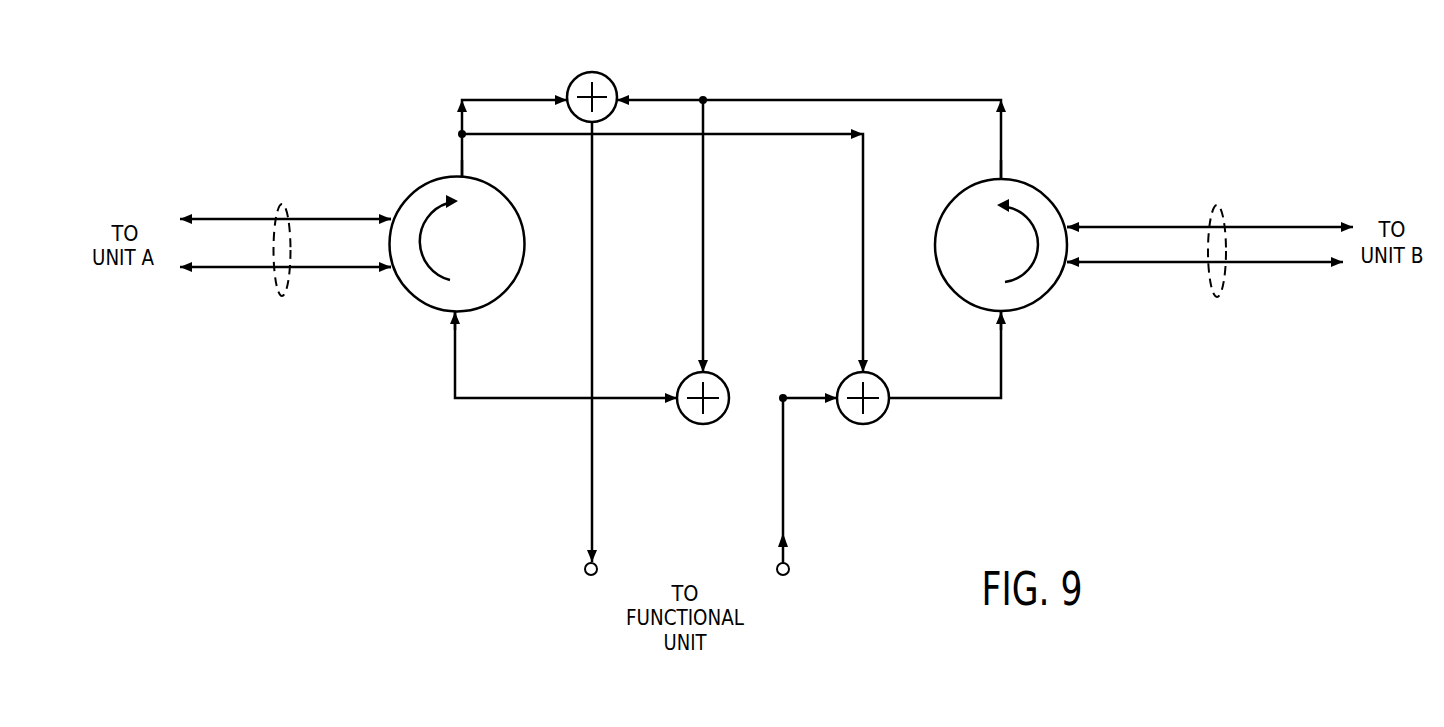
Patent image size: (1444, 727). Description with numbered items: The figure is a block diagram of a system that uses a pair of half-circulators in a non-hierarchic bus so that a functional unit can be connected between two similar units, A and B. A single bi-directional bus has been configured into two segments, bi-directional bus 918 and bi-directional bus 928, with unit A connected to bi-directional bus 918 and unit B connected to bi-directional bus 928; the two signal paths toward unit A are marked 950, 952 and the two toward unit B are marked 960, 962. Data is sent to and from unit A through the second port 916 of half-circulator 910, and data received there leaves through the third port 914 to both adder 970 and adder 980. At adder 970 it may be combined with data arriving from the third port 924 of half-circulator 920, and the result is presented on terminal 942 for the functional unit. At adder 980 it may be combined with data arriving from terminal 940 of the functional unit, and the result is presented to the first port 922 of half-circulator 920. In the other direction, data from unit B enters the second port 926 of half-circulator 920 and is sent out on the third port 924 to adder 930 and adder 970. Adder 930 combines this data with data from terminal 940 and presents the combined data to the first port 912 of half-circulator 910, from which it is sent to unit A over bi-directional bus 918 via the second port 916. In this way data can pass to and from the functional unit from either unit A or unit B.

The half-circulator 910 is at (408, 312).
The port 1 912 is at (466, 314).
The port 3 914 is at (466, 175).
The port 2 916 is at (405, 199).
The bi-directional bus 918 is at (286, 202).
The half-circulator 920 is at (1054, 203).
The port 1 922 is at (1010, 313).
The port 3 924 is at (1003, 176).
The port 2 926 is at (1072, 270).
The bi-directional bus 928 is at (1217, 203).
The adder 930 is at (683, 422).
The terminal 940 is at (792, 572).
The terminal 942 is at (580, 570).
The first signal line to unit A 950 is at (186, 203).
The second signal line to unit A 952 is at (182, 273).
The first signal line to unit B 960 is at (1353, 217).
The second signal line to unit B 962 is at (1343, 272).
The adder 970 is at (598, 72).
The adder 980 is at (843, 422).